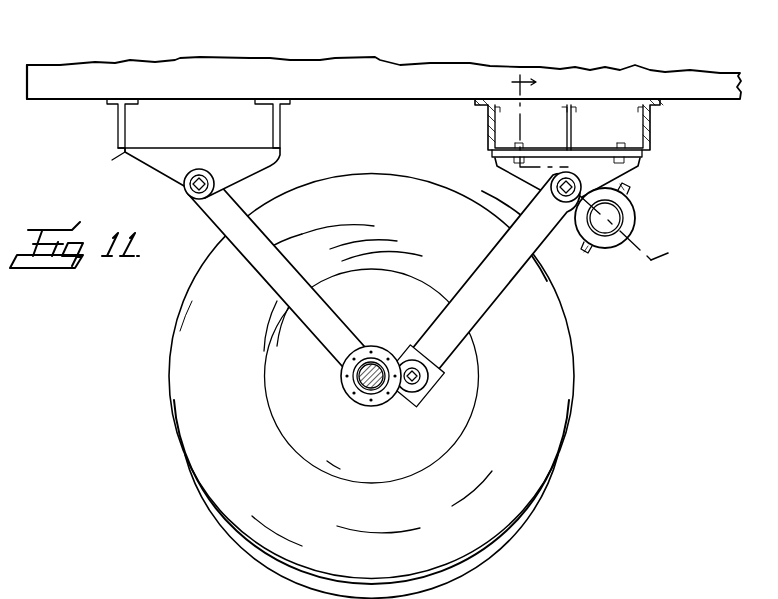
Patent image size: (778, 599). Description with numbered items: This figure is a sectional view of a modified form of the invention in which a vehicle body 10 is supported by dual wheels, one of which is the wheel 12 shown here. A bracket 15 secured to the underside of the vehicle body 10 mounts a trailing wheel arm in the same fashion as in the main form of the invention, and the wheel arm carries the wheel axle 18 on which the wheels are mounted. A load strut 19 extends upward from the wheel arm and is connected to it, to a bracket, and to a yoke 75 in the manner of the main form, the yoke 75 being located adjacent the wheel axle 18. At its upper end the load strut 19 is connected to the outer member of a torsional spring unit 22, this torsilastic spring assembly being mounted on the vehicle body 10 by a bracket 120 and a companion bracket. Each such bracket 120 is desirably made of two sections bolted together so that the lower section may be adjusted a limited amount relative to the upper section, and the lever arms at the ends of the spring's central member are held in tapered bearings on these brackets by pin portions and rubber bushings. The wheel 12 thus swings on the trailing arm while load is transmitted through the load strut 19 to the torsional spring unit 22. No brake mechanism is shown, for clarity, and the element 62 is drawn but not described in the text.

The vehicle body 10 is at (375, 76).
The dual wheel 12 is at (578, 179).
The bracket 15 is at (119, 154).
The wheel axle 18 is at (378, 383).
The load strut 19 is at (488, 266).
The torsional spring unit 22 is at (625, 221).
The pivot 62 is at (565, 208).
The yoke 75 is at (440, 371).
The bracket 120 is at (632, 136).